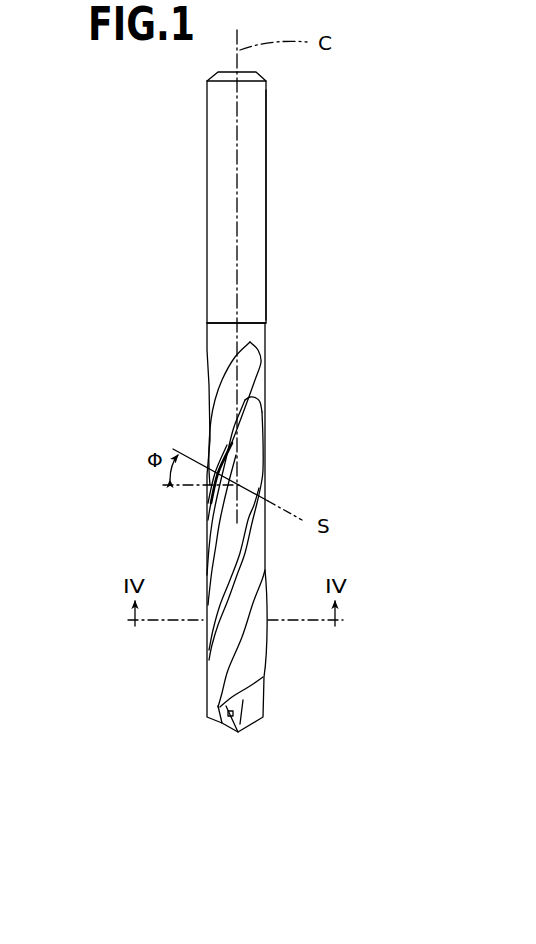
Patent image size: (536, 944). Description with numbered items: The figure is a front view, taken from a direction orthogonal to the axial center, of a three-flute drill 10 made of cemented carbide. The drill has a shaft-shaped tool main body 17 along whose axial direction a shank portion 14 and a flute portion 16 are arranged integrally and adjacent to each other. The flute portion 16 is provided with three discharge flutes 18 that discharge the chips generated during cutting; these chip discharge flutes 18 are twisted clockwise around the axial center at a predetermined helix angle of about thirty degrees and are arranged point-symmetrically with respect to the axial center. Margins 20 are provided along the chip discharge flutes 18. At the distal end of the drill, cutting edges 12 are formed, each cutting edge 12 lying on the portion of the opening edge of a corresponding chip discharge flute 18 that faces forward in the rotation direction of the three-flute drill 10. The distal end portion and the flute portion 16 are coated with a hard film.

The three-flute drill 10 is at (385, 148).
The cutting edge 12 is at (255, 718).
The shank portion 14 is at (195, 172).
The flute portion 16 is at (177, 710).
The tool main body 17 is at (250, 243).
The discharge flute 18 is at (255, 467).
The margin 20 is at (232, 568).